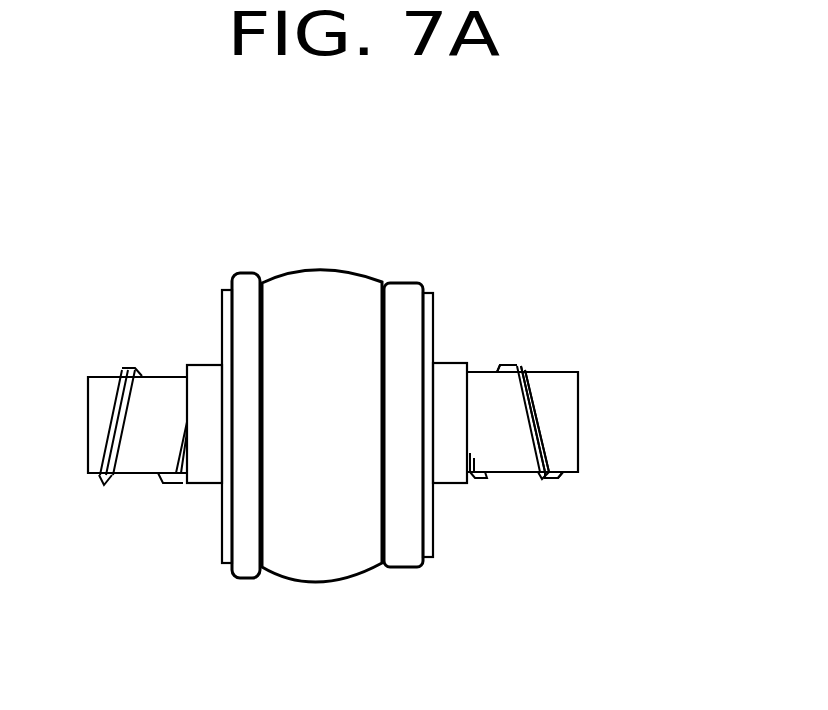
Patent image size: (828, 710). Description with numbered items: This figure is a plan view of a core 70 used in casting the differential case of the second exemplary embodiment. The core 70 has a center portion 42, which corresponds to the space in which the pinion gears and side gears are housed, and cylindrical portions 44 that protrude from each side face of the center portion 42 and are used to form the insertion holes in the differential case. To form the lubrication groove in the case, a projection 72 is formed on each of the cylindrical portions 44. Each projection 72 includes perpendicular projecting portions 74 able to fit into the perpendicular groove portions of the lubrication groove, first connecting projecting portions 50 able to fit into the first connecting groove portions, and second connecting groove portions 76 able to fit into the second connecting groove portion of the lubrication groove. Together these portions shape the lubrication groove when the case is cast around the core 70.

The core 70 is at (421, 213).
The center portion 42 is at (332, 300).
The cylindrical portions 44 is at (163, 393).
The first connecting projecting portions 50 is at (538, 428).
The projection 72 is at (99, 432).
The perpendicular projecting portions 74 is at (530, 377).
The second connecting groove portions 76 is at (505, 365).